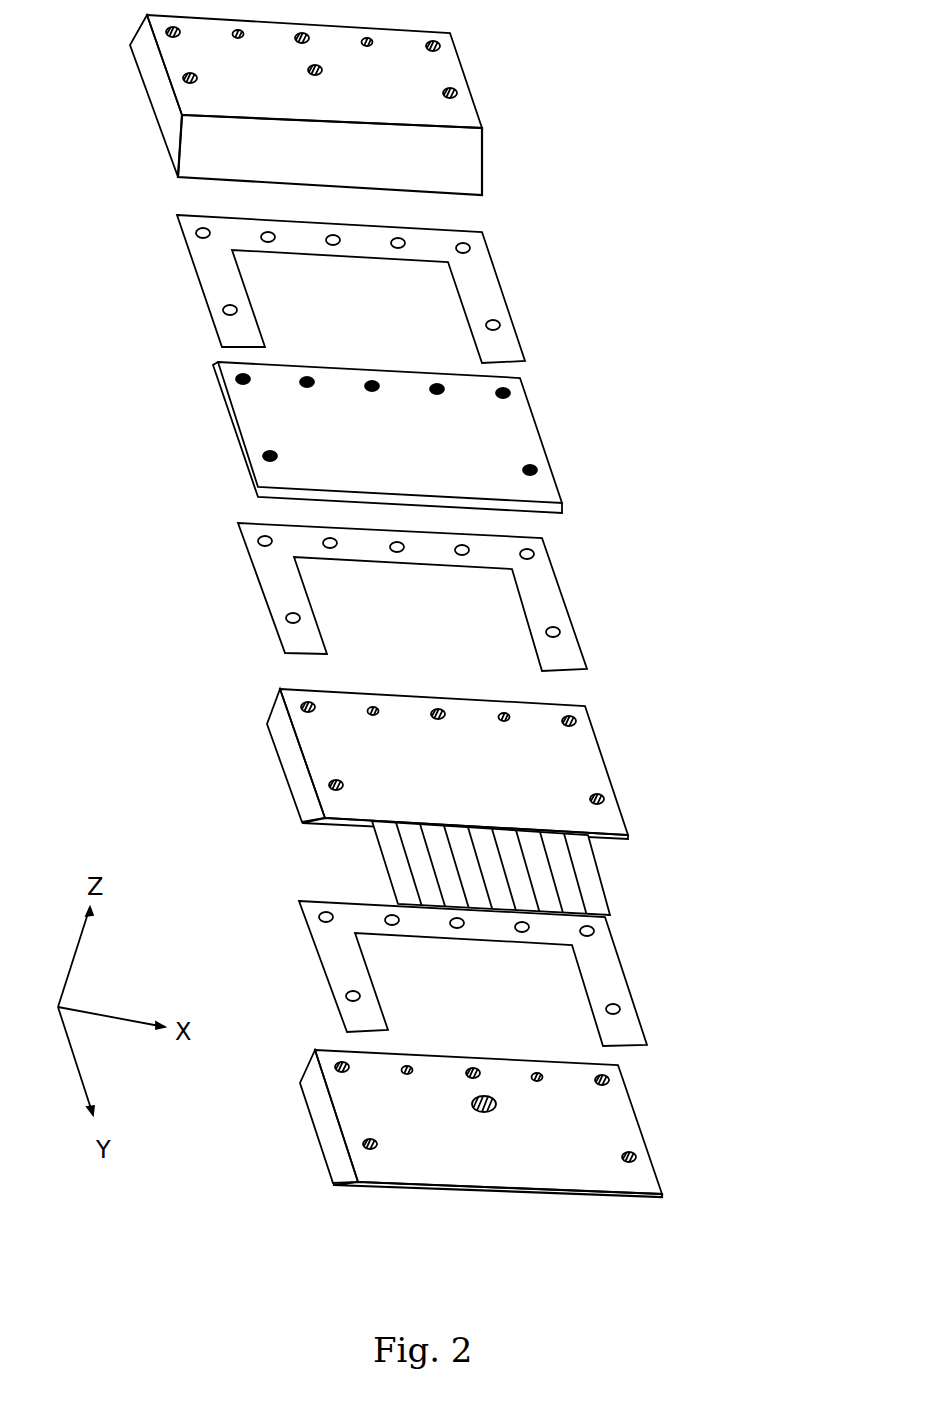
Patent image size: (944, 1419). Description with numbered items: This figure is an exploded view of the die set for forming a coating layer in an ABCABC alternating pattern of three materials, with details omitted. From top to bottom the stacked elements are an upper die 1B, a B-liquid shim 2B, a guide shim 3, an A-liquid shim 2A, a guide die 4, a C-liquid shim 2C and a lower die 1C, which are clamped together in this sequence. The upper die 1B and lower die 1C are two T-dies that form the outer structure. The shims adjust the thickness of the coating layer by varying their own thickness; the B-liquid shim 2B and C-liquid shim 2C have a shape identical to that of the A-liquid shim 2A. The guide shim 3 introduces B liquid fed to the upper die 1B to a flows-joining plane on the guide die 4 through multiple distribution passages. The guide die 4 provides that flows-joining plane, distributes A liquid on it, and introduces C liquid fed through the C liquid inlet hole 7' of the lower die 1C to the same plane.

The upper die 1B is at (473, 89).
The B-liquid shim 2B is at (508, 292).
The guide shim 3 is at (548, 440).
The A-liquid shim 2A is at (576, 599).
The guide die 4 is at (608, 765).
The C-liquid shim 2C is at (625, 961).
The lower die 1C is at (546, 1123).
The C liquid inlet hole 7' is at (600, 1104).